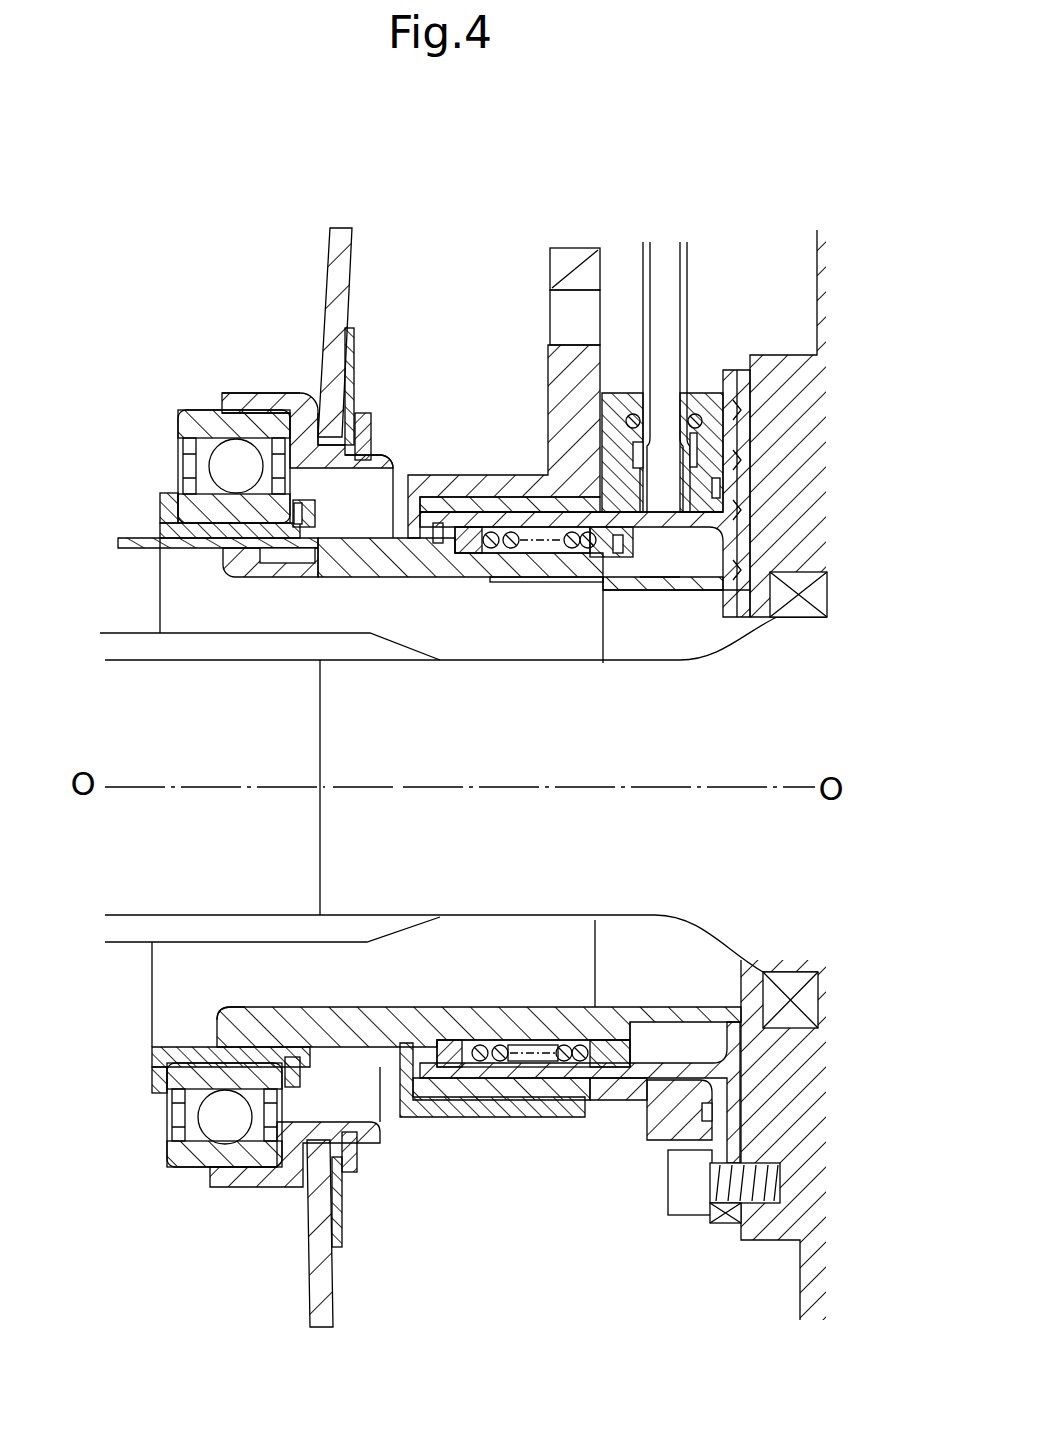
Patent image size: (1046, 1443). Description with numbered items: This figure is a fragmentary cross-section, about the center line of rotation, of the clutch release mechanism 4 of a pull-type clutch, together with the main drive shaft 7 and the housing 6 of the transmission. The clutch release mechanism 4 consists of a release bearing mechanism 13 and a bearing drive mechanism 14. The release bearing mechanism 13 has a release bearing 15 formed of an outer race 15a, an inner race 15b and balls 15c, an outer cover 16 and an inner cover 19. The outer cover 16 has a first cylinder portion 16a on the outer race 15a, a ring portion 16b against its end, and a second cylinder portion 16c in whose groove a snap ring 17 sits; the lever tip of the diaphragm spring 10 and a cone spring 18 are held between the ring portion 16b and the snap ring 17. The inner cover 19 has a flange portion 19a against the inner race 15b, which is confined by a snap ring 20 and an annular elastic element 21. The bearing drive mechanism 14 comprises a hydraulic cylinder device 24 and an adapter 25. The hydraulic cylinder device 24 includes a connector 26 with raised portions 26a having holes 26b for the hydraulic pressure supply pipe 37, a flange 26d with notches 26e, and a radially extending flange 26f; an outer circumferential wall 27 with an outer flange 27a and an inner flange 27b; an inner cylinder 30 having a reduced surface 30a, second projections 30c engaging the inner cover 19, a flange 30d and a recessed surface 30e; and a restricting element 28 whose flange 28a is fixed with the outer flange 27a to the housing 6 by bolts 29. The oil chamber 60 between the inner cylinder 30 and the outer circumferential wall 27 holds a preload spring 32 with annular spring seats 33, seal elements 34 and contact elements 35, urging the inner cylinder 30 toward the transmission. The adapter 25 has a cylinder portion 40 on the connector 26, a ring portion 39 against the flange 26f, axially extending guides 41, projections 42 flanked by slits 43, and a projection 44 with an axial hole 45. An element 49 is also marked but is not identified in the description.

The clutch release mechanism 4 is at (523, 205).
The housing 6 is at (785, 1227).
The main drive shaft 7 is at (140, 915).
The diaphragm spring 10 is at (345, 300).
The release bearing mechanism 13 is at (207, 330).
The bearing drive mechanism 14 is at (473, 368).
The release bearing 15 is at (166, 753).
The outer race 15a is at (205, 420).
The inner race 15b is at (195, 502).
The balls 15c is at (228, 464).
The outer cover 16 is at (331, 704).
The first cylinder portion 16a is at (255, 395).
The ring portion 16b is at (318, 385).
The second cylinder portion 16c is at (383, 454).
The snap ring 17 is at (362, 428).
The cone spring 18 is at (356, 370).
The inner cover 19 is at (218, 533).
The flange portion 19a is at (160, 502).
The snap ring 20 is at (312, 514).
The annular elastic element 21 is at (302, 506).
The hydraulic cylinder device 24 is at (524, 602).
The adapter 25 is at (470, 470).
The connector 26 is at (612, 1177).
The raised portions 26a is at (707, 385).
The holes 26b is at (694, 395).
The flange 26d is at (667, 1117).
The notches 26e is at (690, 1132).
The radially extending flange 26f is at (398, 557).
The outer circumferential wall 27 is at (610, 472).
The outer flange 27a is at (733, 455).
The inner flange 27b is at (430, 556).
The restricting element 28 is at (713, 590).
The flange 28a is at (787, 615).
The bolts 29 is at (692, 1207).
The inner cylinder 30 is at (315, 548).
The surface 30a is at (217, 1024).
The second projections 30c is at (243, 572).
The flange 30d is at (663, 580).
The recessed surface 30e is at (503, 582).
The preload spring 32 is at (507, 1042).
The annular spring seats 33 is at (472, 1045).
The seal elements 34 is at (455, 1037).
The contact elements 35 is at (400, 1009).
The hydraulic pressure supply pipe 37 is at (692, 250).
The ring portion 39 is at (410, 520).
The cylinder portion 40 is at (500, 487).
The axially extending guides 41 is at (145, 545).
The projections 42 is at (583, 1100).
The slits 43 is at (440, 1117).
The projection 44 is at (582, 248).
The hole 45 is at (548, 300).
The shaft end face 49 is at (297, 625).
The oil chamber 60 is at (538, 701).